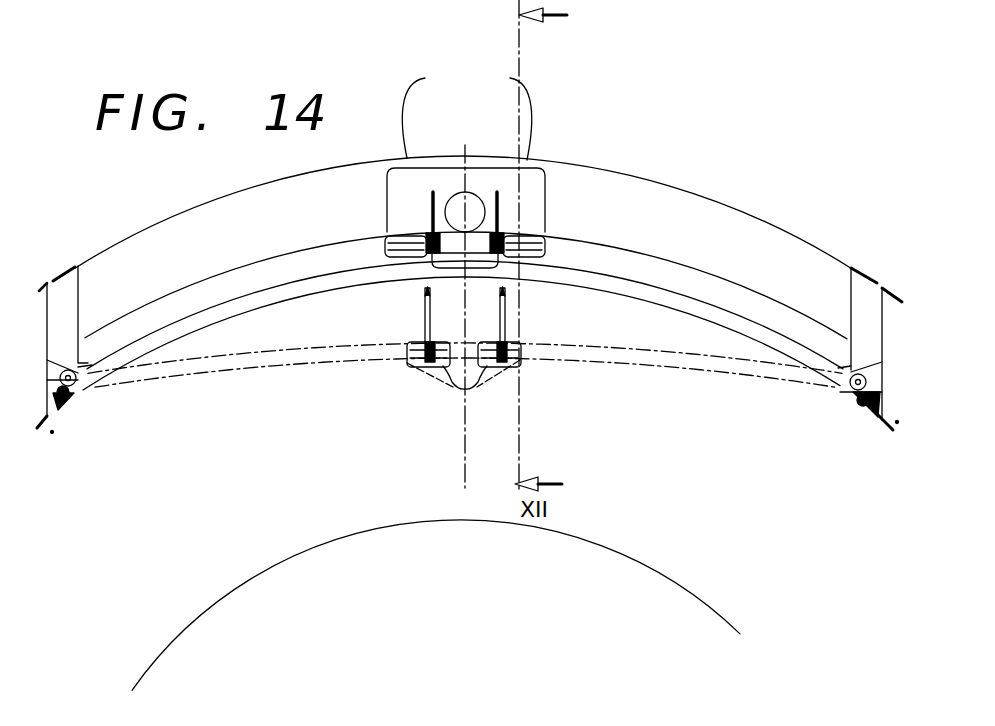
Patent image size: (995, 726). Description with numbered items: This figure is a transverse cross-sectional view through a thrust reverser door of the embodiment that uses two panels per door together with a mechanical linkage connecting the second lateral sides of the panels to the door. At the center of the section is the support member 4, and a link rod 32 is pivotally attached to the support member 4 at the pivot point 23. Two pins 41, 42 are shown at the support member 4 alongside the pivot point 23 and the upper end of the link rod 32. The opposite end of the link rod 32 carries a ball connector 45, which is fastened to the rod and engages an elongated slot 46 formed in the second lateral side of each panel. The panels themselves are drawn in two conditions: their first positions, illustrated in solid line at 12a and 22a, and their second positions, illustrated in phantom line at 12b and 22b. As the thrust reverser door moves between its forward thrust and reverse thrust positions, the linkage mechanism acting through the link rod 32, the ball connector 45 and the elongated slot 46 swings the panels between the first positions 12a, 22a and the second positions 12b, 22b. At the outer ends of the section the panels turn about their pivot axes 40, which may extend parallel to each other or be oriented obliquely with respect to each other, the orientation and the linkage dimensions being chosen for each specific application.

The support member 4 is at (438, 256).
The pin 41 is at (466, 112).
The pin 42 is at (505, 156).
The pivot point 23 is at (503, 240).
The link rod 32 is at (503, 312).
The ball connector 45 is at (520, 358).
The elongated slot 46 is at (457, 385).
The first position of panel 12 12a is at (282, 287).
The first position of panel 22 22a is at (632, 285).
The second position of panel 12 12b is at (280, 357).
The second position of panel 22 22b is at (680, 360).
The pivot axes 40 is at (858, 400).